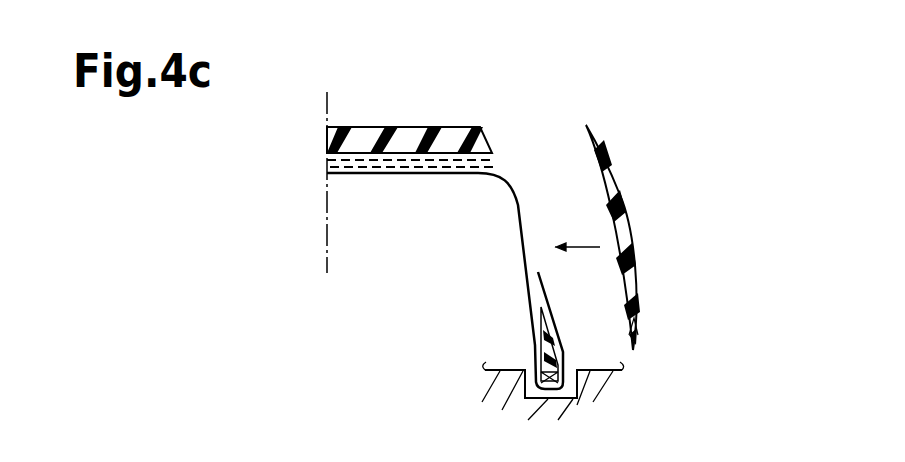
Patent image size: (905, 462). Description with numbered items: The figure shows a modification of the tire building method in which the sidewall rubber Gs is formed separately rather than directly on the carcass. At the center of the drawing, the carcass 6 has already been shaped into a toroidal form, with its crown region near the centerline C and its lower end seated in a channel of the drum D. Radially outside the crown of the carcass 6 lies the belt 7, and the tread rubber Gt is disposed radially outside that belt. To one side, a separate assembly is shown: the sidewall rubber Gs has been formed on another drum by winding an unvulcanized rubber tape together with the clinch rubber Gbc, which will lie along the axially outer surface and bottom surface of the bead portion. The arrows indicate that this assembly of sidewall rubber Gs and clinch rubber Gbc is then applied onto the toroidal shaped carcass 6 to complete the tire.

The tread rubber Gt is at (408, 140).
The belt layer 7 is at (457, 165).
The tire equatorial centerline C is at (326, 167).
The carcass 6 is at (512, 248).
The building drum D is at (508, 370).
The sidewall rubber Gs is at (649, 211).
The clinch rubber Gbc is at (638, 320).